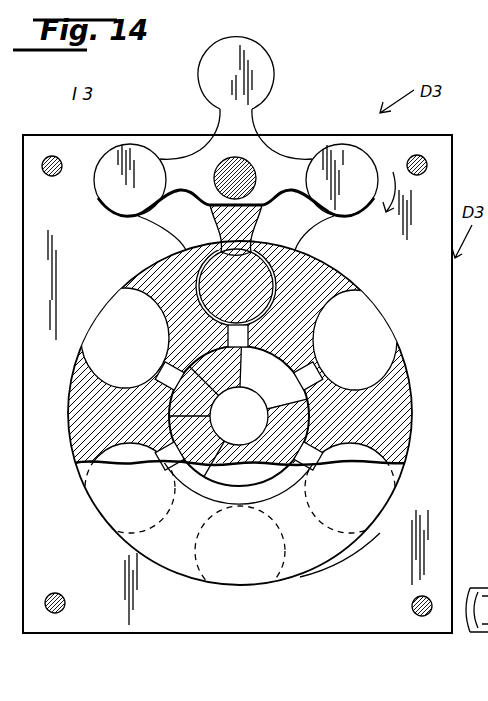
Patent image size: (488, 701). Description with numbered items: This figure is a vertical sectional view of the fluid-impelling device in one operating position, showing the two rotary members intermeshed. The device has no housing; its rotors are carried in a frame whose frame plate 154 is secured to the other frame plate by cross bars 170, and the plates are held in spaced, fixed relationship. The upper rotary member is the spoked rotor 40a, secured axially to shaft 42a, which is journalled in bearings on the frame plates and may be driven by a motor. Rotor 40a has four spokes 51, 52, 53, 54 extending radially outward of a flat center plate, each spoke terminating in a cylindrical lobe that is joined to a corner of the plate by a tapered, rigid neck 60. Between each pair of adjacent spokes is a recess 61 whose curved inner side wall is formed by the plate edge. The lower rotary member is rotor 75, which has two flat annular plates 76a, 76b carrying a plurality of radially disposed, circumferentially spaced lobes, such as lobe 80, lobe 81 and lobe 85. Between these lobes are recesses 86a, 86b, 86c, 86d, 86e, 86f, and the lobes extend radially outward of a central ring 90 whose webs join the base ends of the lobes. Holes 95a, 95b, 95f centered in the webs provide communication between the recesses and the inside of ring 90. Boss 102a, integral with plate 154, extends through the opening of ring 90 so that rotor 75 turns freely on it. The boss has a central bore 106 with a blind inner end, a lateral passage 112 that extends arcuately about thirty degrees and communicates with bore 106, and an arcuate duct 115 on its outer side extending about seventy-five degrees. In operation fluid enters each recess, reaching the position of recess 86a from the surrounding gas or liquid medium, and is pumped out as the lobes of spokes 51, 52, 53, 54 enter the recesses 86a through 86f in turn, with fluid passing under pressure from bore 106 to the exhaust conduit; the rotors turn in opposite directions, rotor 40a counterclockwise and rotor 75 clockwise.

The rotor 40a is at (318, 84).
The shaft 42a is at (246, 167).
The spoke 51 is at (271, 262).
The spoke 52 is at (138, 219).
The spoke 53 is at (199, 84).
The spoke 54 is at (340, 212).
The neck 60 is at (172, 176).
The recess 61 is at (266, 127).
The rotor 75 is at (404, 354).
The annular plate 76a is at (366, 265).
The annular plate 76b is at (315, 555).
The lobe 80 is at (306, 268).
The lobe 81 is at (384, 407).
The lobe 85 is at (152, 280).
The recess 86a is at (208, 250).
The recess 86b is at (373, 323).
The recess 86c is at (373, 468).
The recess 86d is at (273, 580).
The recess 86e is at (127, 462).
The recess 86f is at (101, 368).
The central ring 90 is at (284, 361).
The hole 95a is at (230, 337).
The hole 95b is at (309, 378).
The hole 95f is at (152, 370).
The boss 102a is at (238, 470).
The central bore 106 is at (217, 458).
The passage 112 is at (252, 380).
The duct 115 is at (190, 368).
The frame plate 154 is at (423, 548).
The cross bar 170 is at (65, 614).